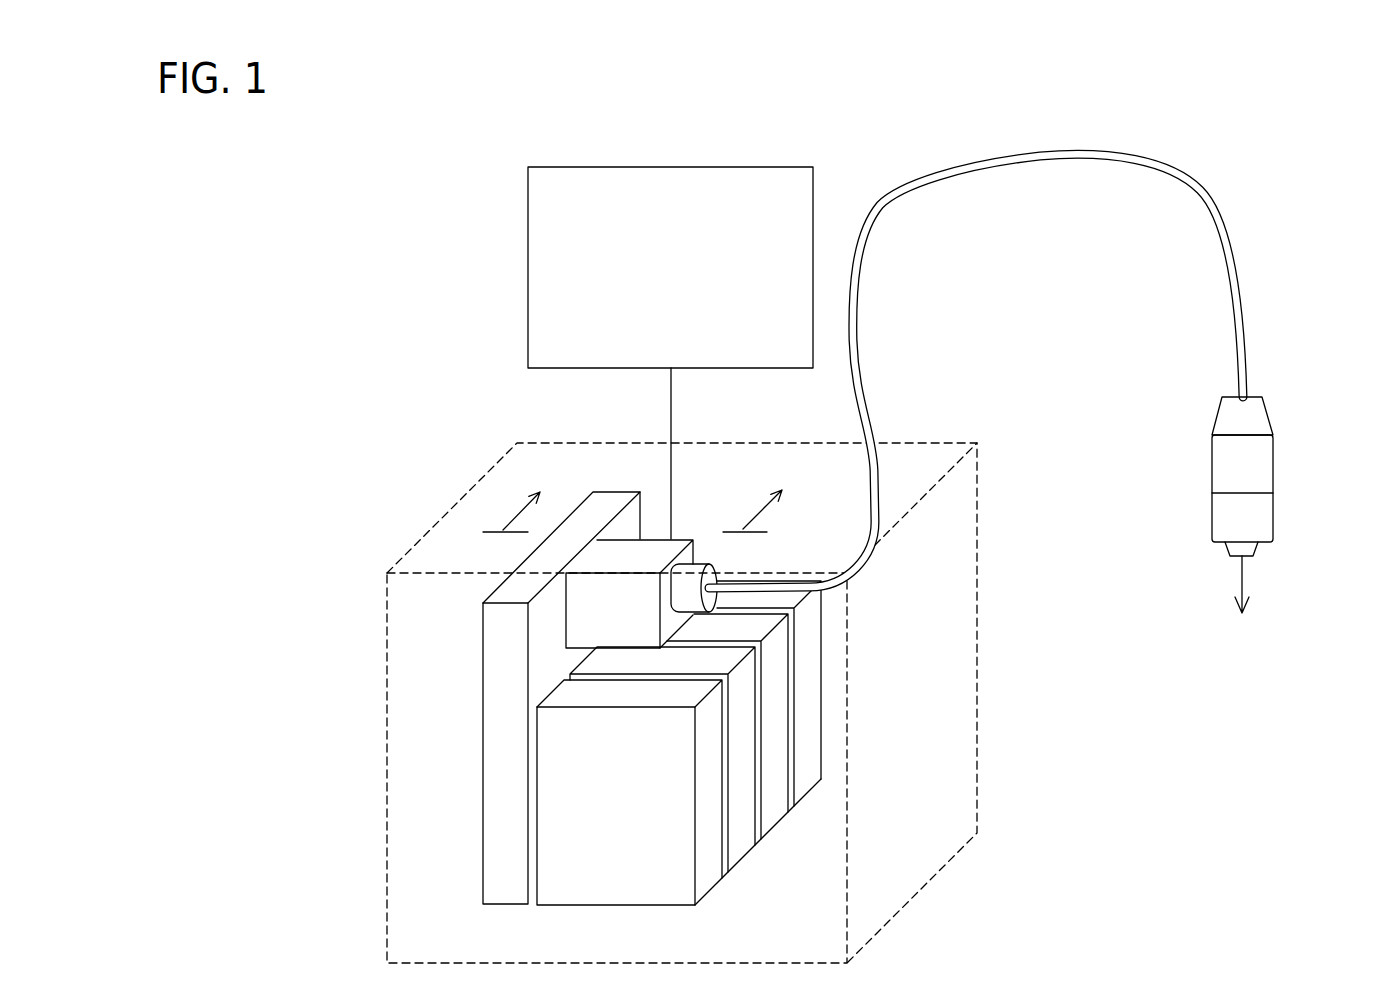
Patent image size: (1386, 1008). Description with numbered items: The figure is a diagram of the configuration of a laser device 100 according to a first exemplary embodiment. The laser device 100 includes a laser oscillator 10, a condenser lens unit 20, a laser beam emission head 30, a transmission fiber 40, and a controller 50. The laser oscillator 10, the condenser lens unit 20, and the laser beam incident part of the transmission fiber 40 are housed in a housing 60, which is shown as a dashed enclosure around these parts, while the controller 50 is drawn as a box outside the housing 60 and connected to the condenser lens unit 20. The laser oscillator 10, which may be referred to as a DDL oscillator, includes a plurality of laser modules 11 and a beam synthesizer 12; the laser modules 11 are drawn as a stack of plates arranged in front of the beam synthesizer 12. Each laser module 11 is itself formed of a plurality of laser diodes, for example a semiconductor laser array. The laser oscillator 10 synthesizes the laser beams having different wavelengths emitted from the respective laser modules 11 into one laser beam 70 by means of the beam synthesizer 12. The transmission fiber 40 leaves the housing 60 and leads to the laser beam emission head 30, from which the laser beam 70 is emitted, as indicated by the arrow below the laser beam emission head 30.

The laser device 100 is at (1262, 160).
The laser oscillator 10 is at (735, 703).
The laser modules 11 is at (713, 883).
The beam synthesizer 12 is at (503, 887).
The condenser lens unit 20 is at (689, 538).
The laser beam emission head 30 is at (1273, 467).
The transmission fiber 40 is at (1100, 161).
The controller 50 is at (757, 167).
The housing 60 is at (980, 518).
The laser beam 70 is at (1256, 578).